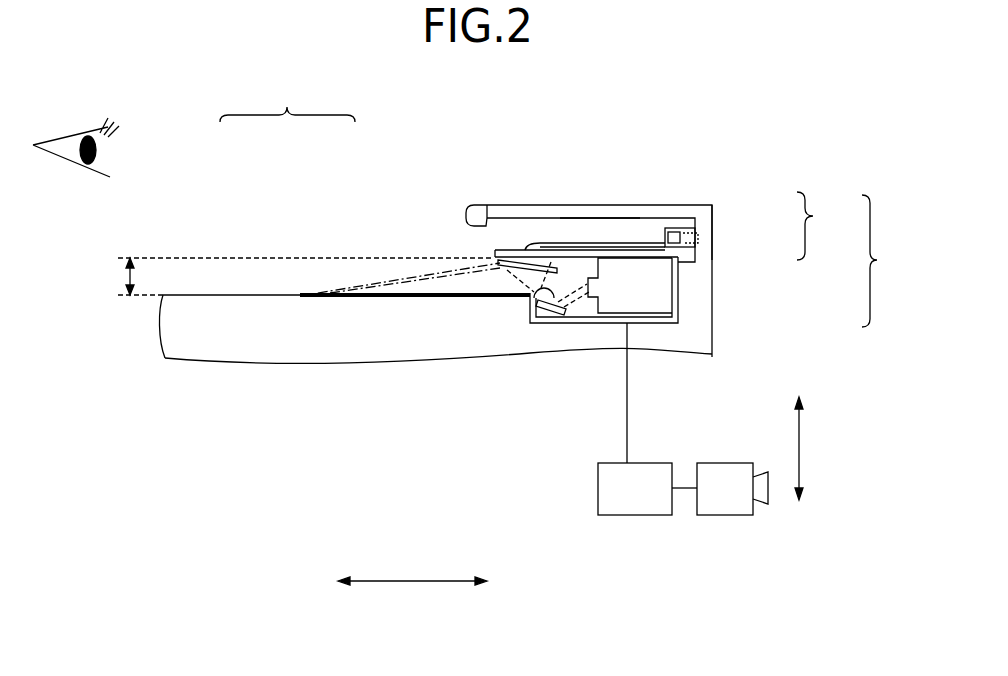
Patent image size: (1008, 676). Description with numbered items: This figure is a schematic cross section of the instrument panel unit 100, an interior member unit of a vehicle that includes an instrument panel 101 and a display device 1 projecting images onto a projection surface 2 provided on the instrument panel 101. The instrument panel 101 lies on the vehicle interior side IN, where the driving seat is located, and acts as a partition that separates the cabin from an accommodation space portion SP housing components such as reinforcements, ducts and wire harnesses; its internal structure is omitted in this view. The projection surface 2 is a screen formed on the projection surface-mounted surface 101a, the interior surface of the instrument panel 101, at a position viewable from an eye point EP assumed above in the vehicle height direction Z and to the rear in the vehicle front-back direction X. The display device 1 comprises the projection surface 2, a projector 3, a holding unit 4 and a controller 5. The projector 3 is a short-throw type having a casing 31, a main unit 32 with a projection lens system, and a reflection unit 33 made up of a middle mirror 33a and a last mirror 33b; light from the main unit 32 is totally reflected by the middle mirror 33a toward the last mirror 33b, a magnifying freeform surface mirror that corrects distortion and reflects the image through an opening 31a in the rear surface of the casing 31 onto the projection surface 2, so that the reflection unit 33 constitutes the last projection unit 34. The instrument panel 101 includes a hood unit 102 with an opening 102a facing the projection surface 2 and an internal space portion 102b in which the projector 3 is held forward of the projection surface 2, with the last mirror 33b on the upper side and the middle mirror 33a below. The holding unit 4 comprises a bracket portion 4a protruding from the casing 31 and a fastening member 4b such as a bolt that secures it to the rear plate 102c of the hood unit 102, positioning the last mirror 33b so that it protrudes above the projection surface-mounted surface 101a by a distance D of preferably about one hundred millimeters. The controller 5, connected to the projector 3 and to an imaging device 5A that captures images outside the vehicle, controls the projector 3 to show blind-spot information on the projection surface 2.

The instrument panel unit 100 is at (287, 102).
The instrument panel 101 is at (191, 268).
The projection surface-mounted surface 101a is at (168, 293).
The display device 1 is at (455, 238).
The projection surface 2 is at (426, 289).
The hood unit 102 is at (550, 205).
The opening 102a is at (468, 204).
The internal space portion 102b is at (600, 235).
The rear plate 102c is at (714, 212).
The holding unit 4 is at (645, 232).
The bracket portion 4a is at (684, 228).
The fastening member 4b is at (673, 228).
The projector 3 is at (879, 261).
The casing 31 is at (680, 297).
The opening 31a is at (545, 322).
The main unit 32 is at (648, 287).
The reflection unit 33 is at (820, 226).
The middle mirror 33a is at (553, 292).
The last mirror 33b is at (700, 233).
The projection unit 34 is at (836, 246).
The controller 5 is at (633, 515).
The imaging device 5A is at (723, 515).
The eye point EP is at (67, 140).
The vehicle interior side IN is at (48, 265).
The distance D is at (125, 280).
The accommodation space portion SP is at (170, 398).
The vehicle front-back direction X is at (416, 584).
The vehicle height direction Z is at (802, 442).